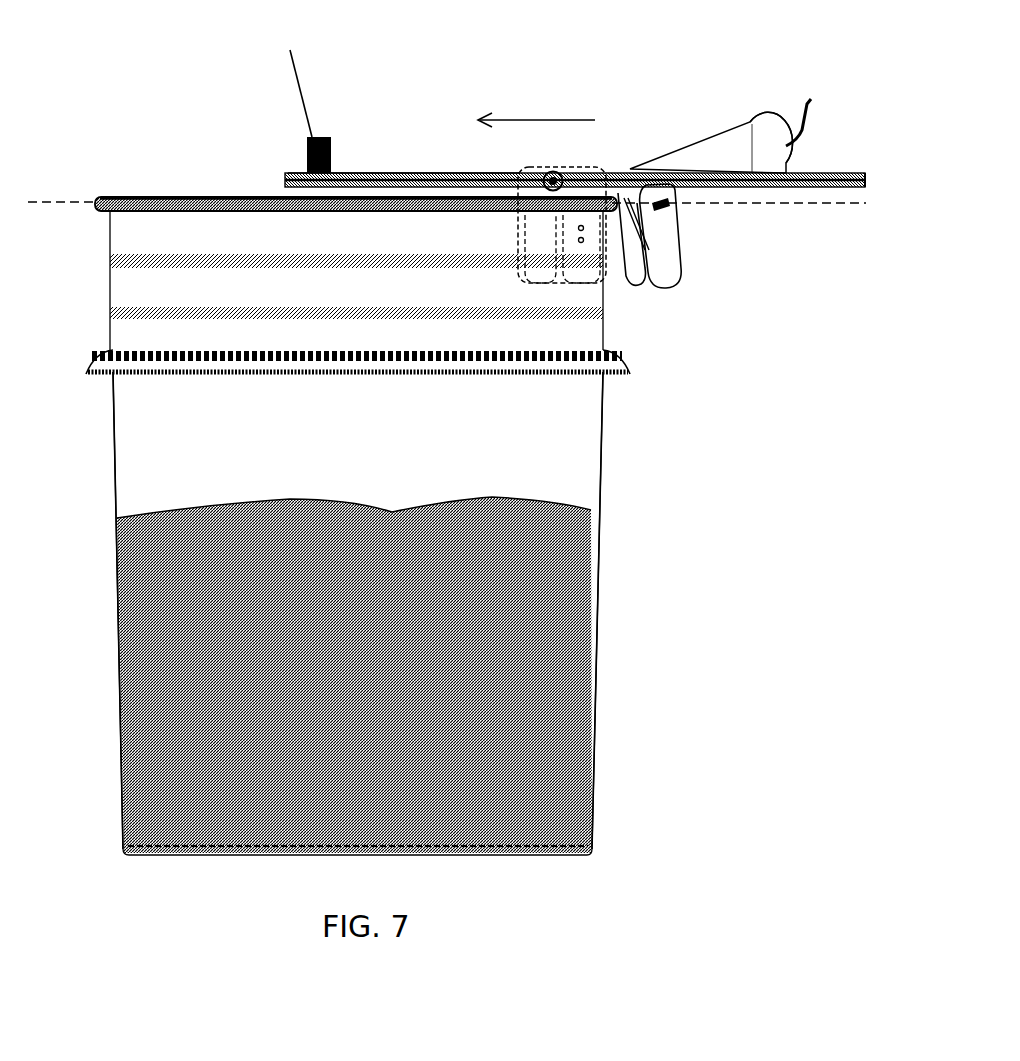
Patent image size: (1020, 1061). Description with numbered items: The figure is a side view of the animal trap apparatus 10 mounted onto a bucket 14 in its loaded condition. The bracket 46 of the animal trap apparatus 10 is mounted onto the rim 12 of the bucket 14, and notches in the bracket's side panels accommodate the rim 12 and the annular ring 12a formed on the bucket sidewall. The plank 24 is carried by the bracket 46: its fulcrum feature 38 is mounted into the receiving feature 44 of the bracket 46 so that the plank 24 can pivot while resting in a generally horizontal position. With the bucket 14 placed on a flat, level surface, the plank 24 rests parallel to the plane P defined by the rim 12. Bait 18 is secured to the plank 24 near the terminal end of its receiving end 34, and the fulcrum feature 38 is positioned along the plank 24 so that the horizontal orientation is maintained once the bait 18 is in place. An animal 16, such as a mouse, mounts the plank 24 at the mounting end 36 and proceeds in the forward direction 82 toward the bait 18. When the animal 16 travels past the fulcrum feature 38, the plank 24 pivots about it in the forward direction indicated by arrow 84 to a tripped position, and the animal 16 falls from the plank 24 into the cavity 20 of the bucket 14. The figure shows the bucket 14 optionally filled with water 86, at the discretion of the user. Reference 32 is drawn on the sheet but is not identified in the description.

The animal trap apparatus 10 is at (648, 122).
The rim 12 is at (144, 197).
The annular ring 12a is at (108, 262).
The bucket 14 is at (586, 442).
The animal 16 is at (749, 124).
The bait 18 is at (316, 137).
The cavity 20 is at (155, 451).
The plank 24 is at (866, 174).
The pivot line 32 is at (290, 81).
The receiving end 34 is at (345, 172).
The mounting end 36 is at (866, 186).
The fulcrum feature 38 is at (558, 173).
The receiving feature 44 is at (549, 174).
The bracket 46 is at (689, 256).
The direction 82 is at (510, 120).
The arrow 84 is at (243, 188).
The water 86 is at (568, 631).
The plane P is at (818, 207).